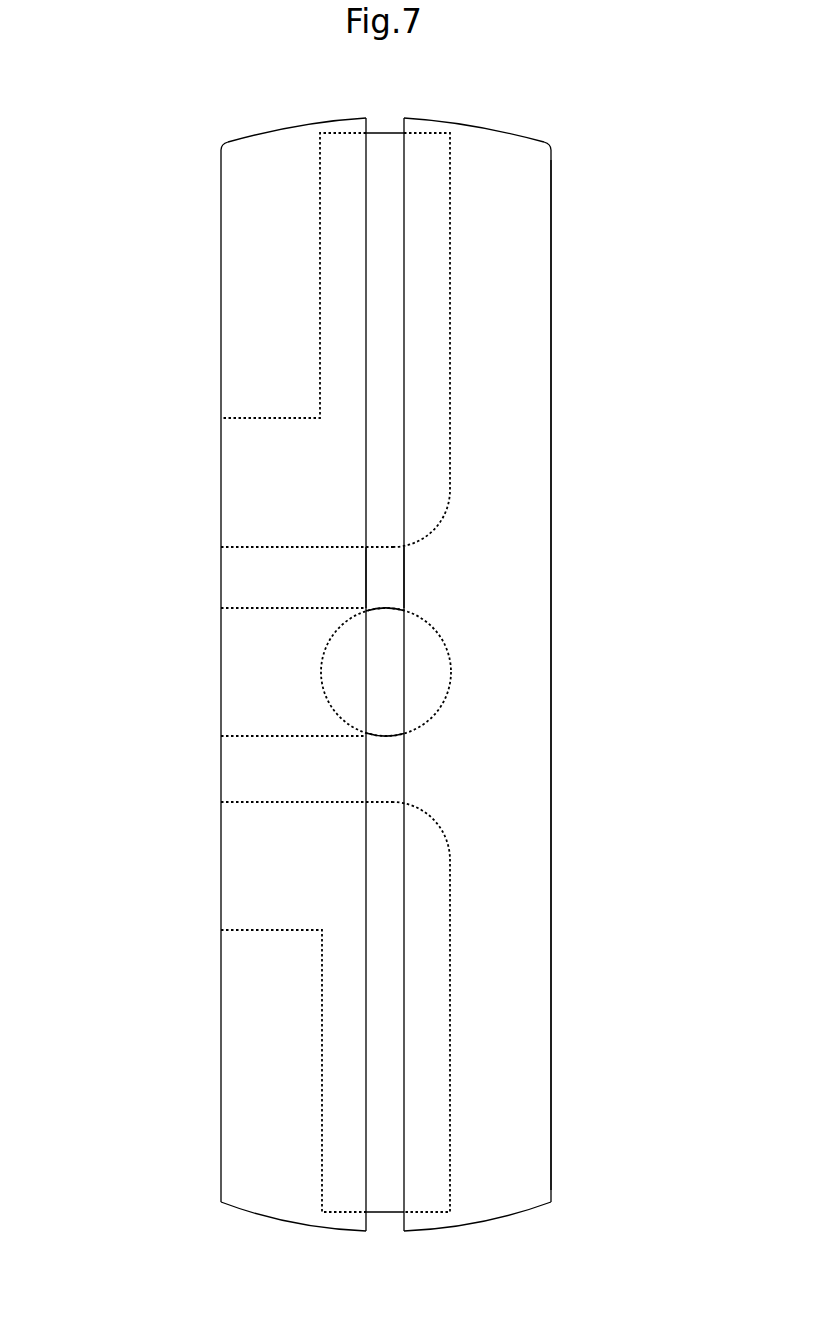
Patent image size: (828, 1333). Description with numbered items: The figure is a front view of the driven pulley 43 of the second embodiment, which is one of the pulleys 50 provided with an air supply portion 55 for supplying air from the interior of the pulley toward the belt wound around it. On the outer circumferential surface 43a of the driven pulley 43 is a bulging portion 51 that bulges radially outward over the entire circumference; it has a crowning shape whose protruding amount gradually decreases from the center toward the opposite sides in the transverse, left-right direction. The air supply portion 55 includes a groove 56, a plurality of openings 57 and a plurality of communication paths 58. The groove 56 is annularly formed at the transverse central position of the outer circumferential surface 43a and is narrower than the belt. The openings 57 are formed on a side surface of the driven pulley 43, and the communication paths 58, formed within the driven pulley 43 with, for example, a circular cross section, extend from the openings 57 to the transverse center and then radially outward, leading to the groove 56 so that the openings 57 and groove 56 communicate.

The driven pulley 43 is at (423, 80).
The pulley 50 is at (409, 662).
The outer circumferential surface 43a is at (457, 789).
The bulging portion 51 is at (508, 127).
The air supply portion 55 is at (365, 672).
The groove 56 is at (398, 569).
The openings 57 is at (221, 479).
The communication paths 58 is at (437, 330).